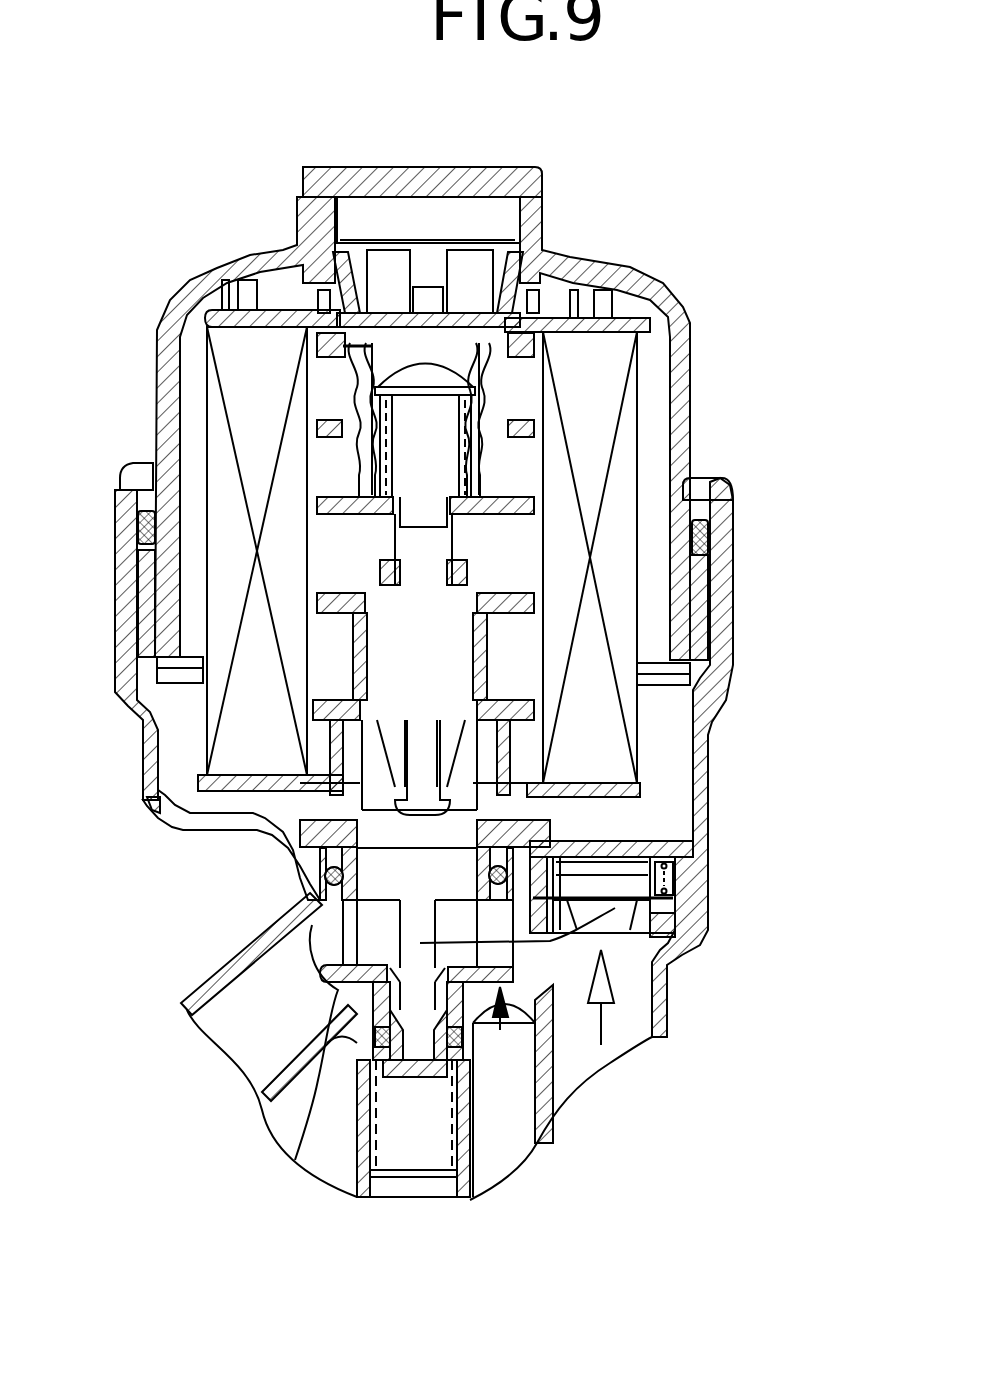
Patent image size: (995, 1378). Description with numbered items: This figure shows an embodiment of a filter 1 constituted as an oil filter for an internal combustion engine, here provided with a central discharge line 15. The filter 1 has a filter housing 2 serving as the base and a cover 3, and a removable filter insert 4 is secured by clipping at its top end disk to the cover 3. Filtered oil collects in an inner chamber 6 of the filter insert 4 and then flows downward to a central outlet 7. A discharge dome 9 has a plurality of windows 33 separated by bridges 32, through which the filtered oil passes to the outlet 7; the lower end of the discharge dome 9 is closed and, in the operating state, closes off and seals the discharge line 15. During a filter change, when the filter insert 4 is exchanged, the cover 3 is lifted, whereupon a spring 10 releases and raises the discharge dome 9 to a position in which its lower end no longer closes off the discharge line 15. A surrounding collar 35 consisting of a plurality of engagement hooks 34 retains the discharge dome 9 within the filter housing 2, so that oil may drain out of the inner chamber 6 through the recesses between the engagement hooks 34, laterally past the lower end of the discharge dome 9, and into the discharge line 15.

The filter 1 is at (772, 238).
The filter housing 2 is at (700, 793).
The cover 3 is at (623, 280).
The filter insert 4 is at (617, 397).
The inner chamber 6 is at (443, 660).
The central outlet 7 is at (257, 1050).
The discharge dome 9 is at (383, 876).
The spring 10 is at (445, 1113).
The central discharge line 15 is at (413, 1190).
The bridges 32 is at (483, 918).
The windows 33 is at (380, 947).
The engagement hooks 34 is at (320, 977).
The surrounding collar 35 is at (501, 1020).